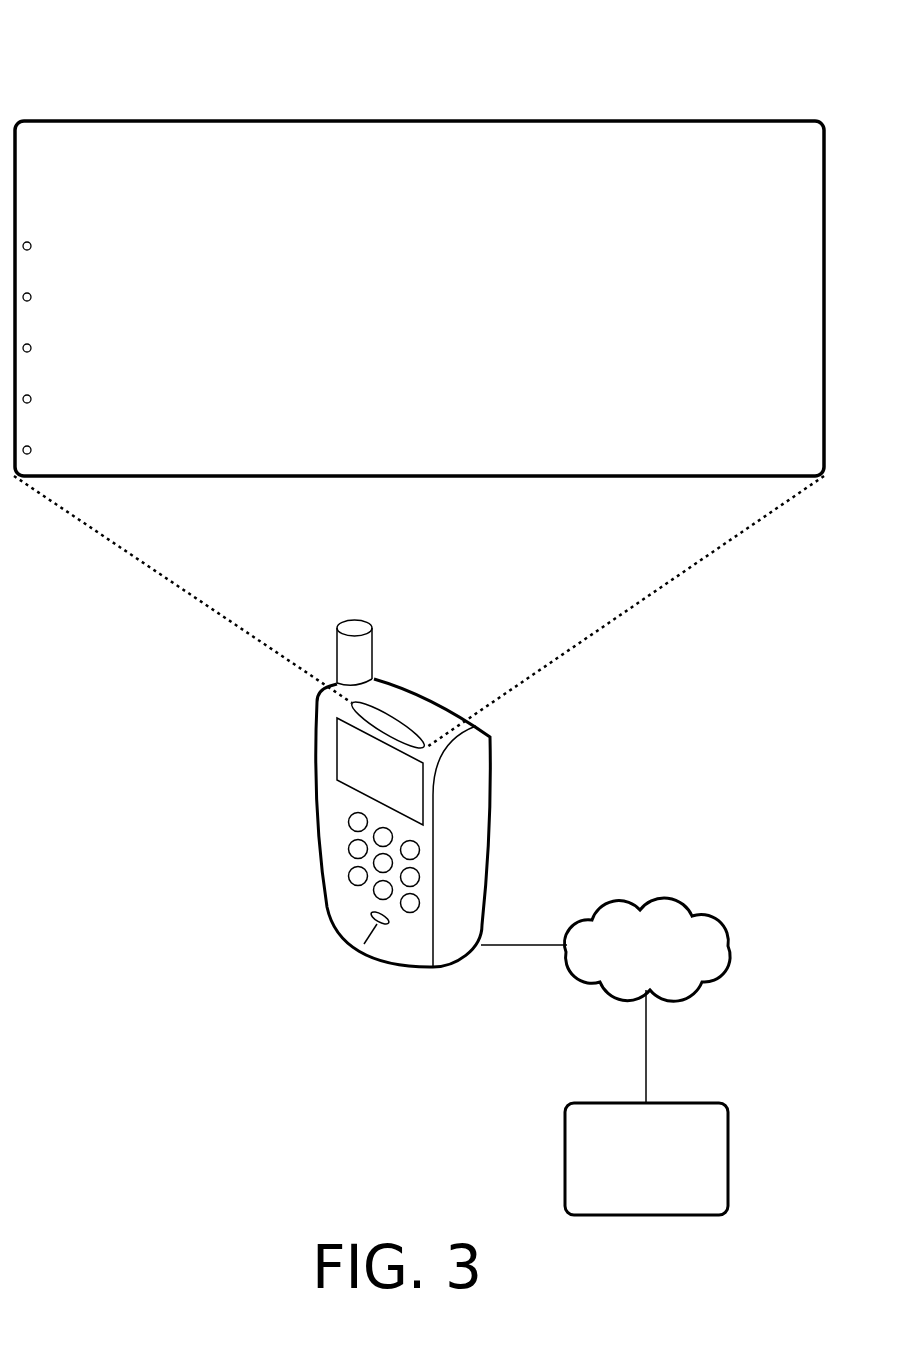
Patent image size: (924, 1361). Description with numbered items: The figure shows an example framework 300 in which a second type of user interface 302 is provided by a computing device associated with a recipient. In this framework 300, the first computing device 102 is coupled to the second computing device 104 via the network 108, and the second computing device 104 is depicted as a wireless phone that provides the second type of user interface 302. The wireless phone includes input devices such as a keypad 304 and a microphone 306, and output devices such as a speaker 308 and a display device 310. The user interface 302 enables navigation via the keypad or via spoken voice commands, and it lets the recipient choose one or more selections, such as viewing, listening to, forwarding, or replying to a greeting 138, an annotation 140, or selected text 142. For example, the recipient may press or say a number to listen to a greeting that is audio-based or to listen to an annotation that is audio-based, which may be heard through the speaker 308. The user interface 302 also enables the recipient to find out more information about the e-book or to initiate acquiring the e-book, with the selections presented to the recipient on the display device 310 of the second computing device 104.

The framework 300 is at (142, 45).
The second type of user interface 302 is at (420, 121).
The greeting 138 is at (586, 258).
The annotation 140 is at (614, 309).
The selected text 142 is at (646, 360).
The second computing device 104 is at (393, 793).
The speaker 308 is at (388, 716).
The display device 310 is at (340, 755).
The keypad 304 is at (308, 882).
The microphone 306 is at (364, 945).
The network 108 is at (664, 974).
The first computing device 102 is at (663, 1206).